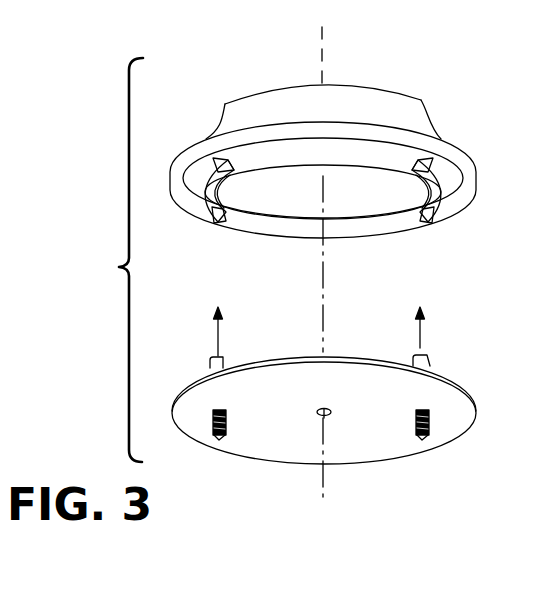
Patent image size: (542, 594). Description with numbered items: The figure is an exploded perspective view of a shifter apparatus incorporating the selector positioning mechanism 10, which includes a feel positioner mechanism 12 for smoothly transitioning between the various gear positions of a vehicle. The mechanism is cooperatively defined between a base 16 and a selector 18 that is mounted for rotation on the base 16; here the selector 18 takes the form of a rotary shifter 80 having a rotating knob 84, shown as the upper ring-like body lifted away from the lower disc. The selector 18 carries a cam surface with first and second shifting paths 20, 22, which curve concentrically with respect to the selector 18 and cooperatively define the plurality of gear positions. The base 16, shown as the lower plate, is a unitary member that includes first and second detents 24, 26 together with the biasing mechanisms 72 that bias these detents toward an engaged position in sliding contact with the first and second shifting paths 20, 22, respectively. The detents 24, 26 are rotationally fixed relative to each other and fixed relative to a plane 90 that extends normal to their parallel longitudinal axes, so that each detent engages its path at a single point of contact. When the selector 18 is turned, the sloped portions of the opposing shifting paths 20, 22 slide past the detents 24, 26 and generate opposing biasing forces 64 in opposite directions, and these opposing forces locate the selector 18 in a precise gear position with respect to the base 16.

The selector positioning mechanism 10 is at (112, 260).
The feel positioner mechanism 12 is at (464, 223).
The base 16 is at (436, 326).
The selector 18 is at (261, 76).
The first shifting path 20 is at (435, 172).
The second shifting path 22 is at (207, 177).
The first detent 24 is at (430, 357).
The second detent 26 is at (225, 358).
The opposing biasing forces 64 is at (215, 333).
The biasing mechanisms 72 is at (228, 432).
The rotary shifter 80 is at (397, 93).
The rotating knob 84 is at (343, 106).
The plane 90 is at (457, 440).